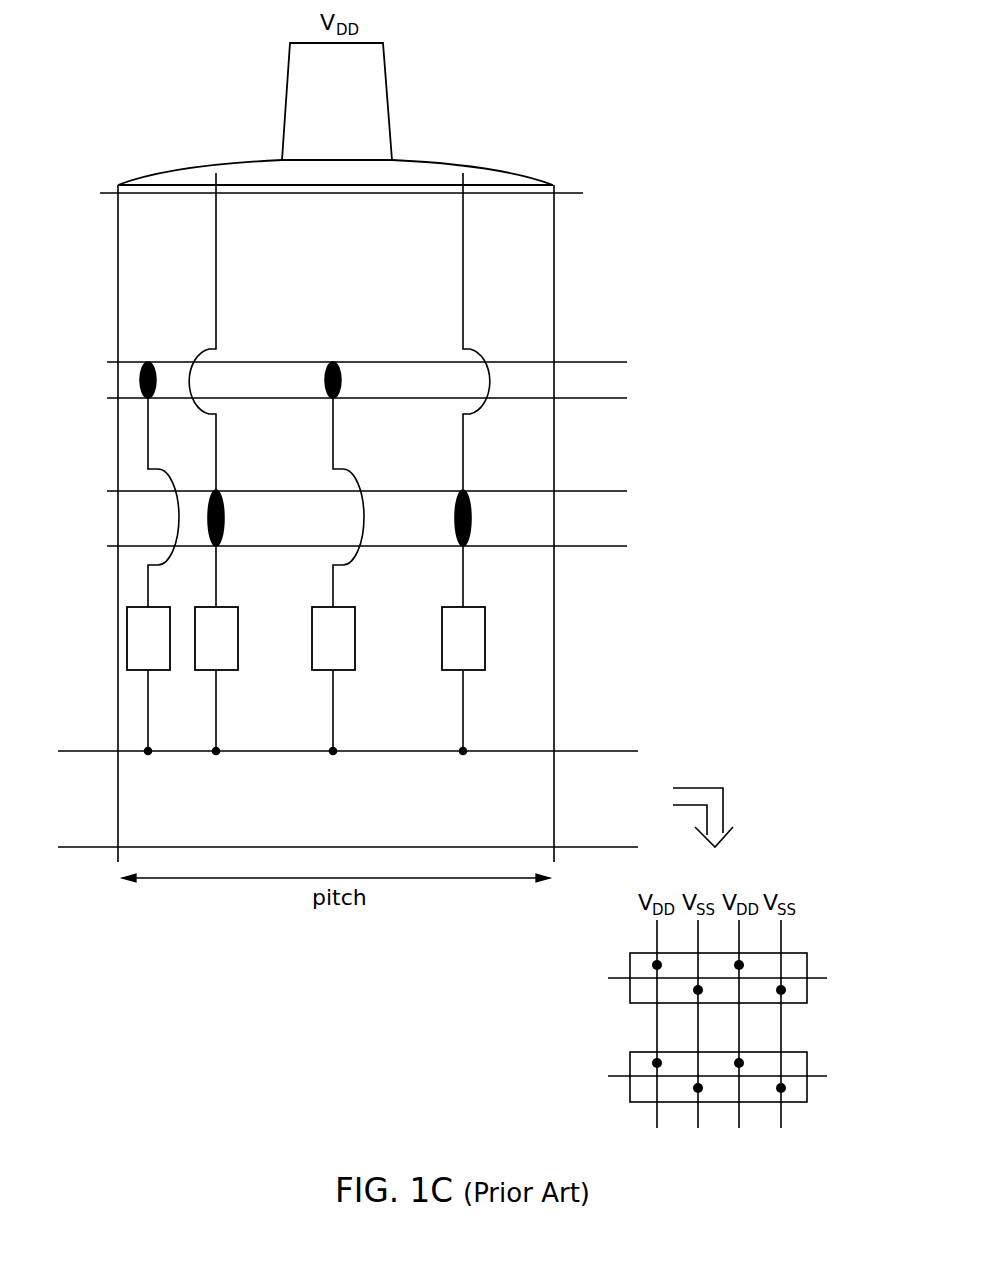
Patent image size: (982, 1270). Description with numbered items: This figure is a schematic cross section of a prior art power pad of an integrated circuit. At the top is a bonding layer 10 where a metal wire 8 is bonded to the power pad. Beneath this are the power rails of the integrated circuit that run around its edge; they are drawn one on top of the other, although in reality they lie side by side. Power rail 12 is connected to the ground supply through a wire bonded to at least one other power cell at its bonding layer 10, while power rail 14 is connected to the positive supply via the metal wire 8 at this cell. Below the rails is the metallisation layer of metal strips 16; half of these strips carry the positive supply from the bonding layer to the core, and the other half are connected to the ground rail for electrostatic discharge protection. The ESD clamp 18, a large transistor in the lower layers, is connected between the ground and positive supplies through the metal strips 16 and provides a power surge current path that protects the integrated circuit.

The metal wire 8 is at (368, 98).
The bonding layer 10 is at (553, 185).
The power rail 12 is at (683, 383).
The power rail 14 is at (683, 528).
The metal strips 16 is at (485, 638).
The ESD clamp 18 is at (578, 802).